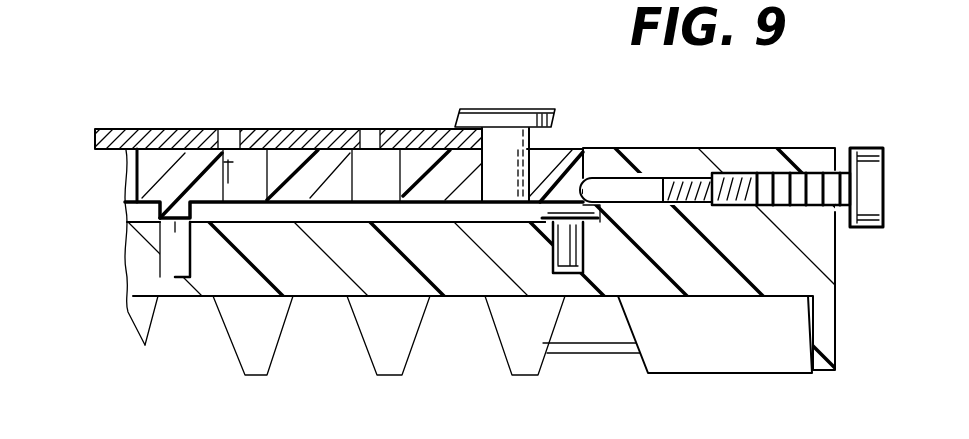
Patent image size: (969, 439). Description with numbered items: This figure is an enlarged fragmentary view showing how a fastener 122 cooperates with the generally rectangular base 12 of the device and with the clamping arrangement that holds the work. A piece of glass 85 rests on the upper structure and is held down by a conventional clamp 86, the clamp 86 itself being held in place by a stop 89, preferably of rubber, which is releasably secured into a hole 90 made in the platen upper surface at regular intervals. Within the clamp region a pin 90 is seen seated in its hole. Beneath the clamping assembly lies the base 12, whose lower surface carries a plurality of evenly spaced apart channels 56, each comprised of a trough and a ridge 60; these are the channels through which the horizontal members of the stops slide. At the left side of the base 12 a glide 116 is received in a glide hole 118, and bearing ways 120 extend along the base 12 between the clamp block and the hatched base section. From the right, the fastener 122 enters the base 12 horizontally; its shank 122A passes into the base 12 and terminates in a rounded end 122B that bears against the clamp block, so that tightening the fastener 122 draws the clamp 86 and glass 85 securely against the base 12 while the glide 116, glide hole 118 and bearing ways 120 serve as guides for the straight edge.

The base 12 is at (745, 147).
The channels 56 is at (321, 310).
The ridge 60 is at (525, 357).
The glass 85 is at (150, 110).
The clamp 86 is at (272, 148).
The stop 89 is at (473, 126).
The hole 90 is at (221, 161).
The glide 116 is at (570, 240).
The glide hole 118 is at (168, 273).
The bearing ways 120 is at (172, 225).
The adjustment bolt 122 is at (892, 160).
The bolt shank 122A is at (628, 187).
The bolt end 122B is at (587, 177).